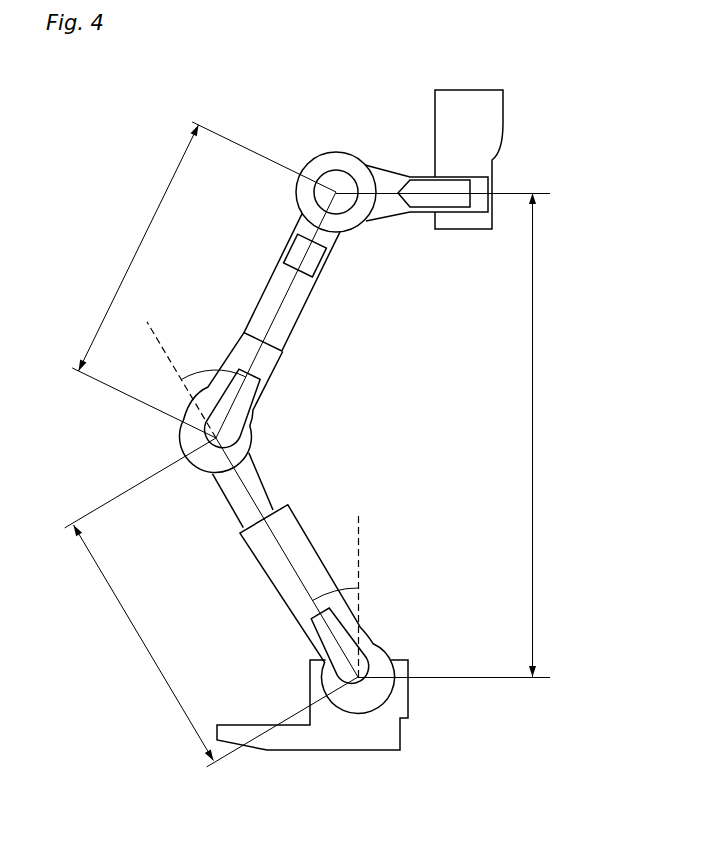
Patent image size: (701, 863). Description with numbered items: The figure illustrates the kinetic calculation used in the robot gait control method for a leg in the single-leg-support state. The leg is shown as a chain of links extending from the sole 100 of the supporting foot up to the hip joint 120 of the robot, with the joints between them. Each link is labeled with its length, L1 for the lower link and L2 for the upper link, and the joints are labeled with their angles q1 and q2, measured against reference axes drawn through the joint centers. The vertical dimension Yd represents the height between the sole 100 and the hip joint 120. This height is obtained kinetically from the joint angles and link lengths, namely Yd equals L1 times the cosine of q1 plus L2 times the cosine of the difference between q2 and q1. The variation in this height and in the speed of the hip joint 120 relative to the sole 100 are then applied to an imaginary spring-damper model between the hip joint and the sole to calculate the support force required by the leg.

The sole 100 is at (360, 737).
The hip joint 120 is at (492, 165).
The link length L1 is at (211, 602).
The link length L2 is at (204, 280).
The height Yd is at (464, 435).
The joint angle q1 is at (336, 594).
The joint angle q2 is at (196, 380).